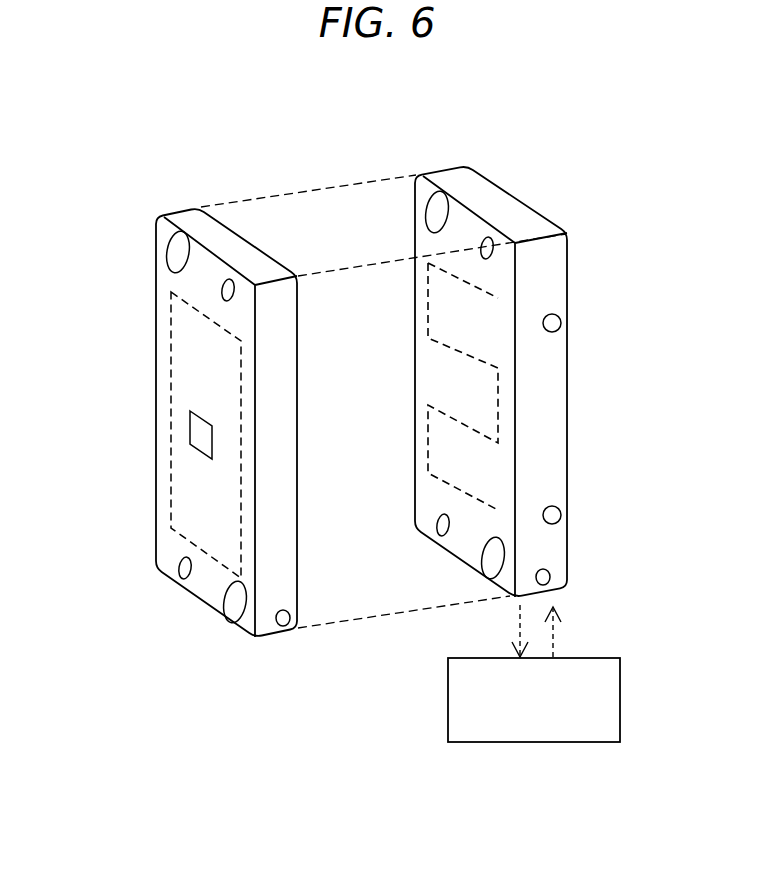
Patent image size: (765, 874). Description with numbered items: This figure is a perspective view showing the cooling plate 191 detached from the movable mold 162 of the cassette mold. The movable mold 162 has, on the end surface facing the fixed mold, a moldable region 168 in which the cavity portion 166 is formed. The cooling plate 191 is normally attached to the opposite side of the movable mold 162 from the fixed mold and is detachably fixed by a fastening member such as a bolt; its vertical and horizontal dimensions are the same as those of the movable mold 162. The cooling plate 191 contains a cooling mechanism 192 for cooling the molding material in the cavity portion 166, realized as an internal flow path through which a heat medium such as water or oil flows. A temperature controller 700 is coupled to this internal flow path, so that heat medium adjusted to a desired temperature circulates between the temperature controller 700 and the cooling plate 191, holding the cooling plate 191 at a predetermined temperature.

The movable mold 162 is at (227, 242).
The cavity portion 166 is at (198, 448).
The moldable region 168 is at (167, 377).
The cooling plate 191 is at (507, 207).
The cooling mechanism 192 is at (502, 410).
The temperature controller 700 is at (535, 743).